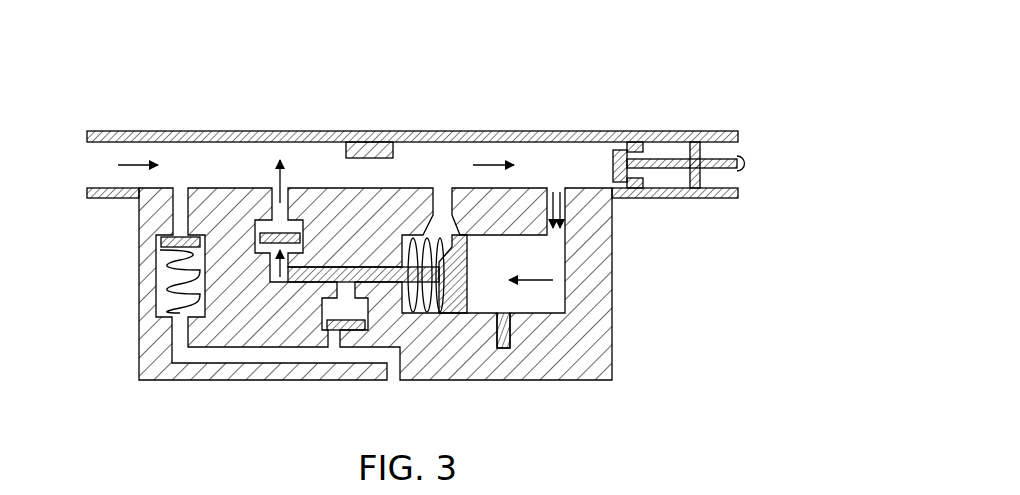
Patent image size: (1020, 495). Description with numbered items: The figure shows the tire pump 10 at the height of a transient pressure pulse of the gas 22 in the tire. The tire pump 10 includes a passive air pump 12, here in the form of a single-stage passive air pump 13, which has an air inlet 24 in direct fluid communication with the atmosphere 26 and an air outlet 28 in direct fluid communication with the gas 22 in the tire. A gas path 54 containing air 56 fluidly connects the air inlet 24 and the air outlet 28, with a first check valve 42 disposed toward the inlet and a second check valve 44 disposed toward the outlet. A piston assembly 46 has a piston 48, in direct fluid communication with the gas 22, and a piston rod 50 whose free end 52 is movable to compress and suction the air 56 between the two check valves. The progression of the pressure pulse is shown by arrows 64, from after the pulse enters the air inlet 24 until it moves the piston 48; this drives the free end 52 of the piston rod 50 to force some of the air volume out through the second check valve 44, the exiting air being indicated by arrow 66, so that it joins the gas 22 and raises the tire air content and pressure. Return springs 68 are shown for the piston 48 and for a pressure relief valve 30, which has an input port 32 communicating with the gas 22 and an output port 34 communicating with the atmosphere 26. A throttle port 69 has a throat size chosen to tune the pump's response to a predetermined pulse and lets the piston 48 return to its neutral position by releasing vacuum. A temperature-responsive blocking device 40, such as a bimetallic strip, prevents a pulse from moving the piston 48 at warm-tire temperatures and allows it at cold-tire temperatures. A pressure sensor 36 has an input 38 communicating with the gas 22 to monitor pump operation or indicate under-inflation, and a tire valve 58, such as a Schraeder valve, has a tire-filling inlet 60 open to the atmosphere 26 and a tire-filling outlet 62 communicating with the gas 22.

The tire pump 10 is at (230, 69).
The passive air pump 12 is at (621, 333).
The single-stage passive air pump 13 is at (621, 365).
The gas 22 is at (122, 188).
The air inlet 24 is at (392, 378).
The atmosphere 26 is at (482, 421).
The air outlet 28 is at (95, 166).
The pressure relief valve 30 is at (163, 241).
The input port 32 is at (180, 189).
The output port 34 is at (178, 326).
The pressure sensor 36 is at (367, 145).
The input 38 is at (345, 149).
The temperature-responsive blocking device 40 is at (505, 346).
The first check valve 42 is at (337, 323).
The second check valve 44 is at (272, 236).
The piston assembly 46 is at (472, 291).
The piston 48 is at (468, 257).
The piston rod 50 is at (390, 235).
The free end 52 is at (278, 282).
The gas path 54 is at (277, 281).
The air 56 is at (347, 316).
The tire valve 58 is at (752, 149).
The tire-filling inlet 60 is at (738, 182).
The tire-filling outlet 62 is at (618, 150).
The arrows 64 is at (138, 162).
The arrow 66 is at (283, 178).
The return springs 68 is at (160, 281).
The throttle port 69 is at (441, 193).